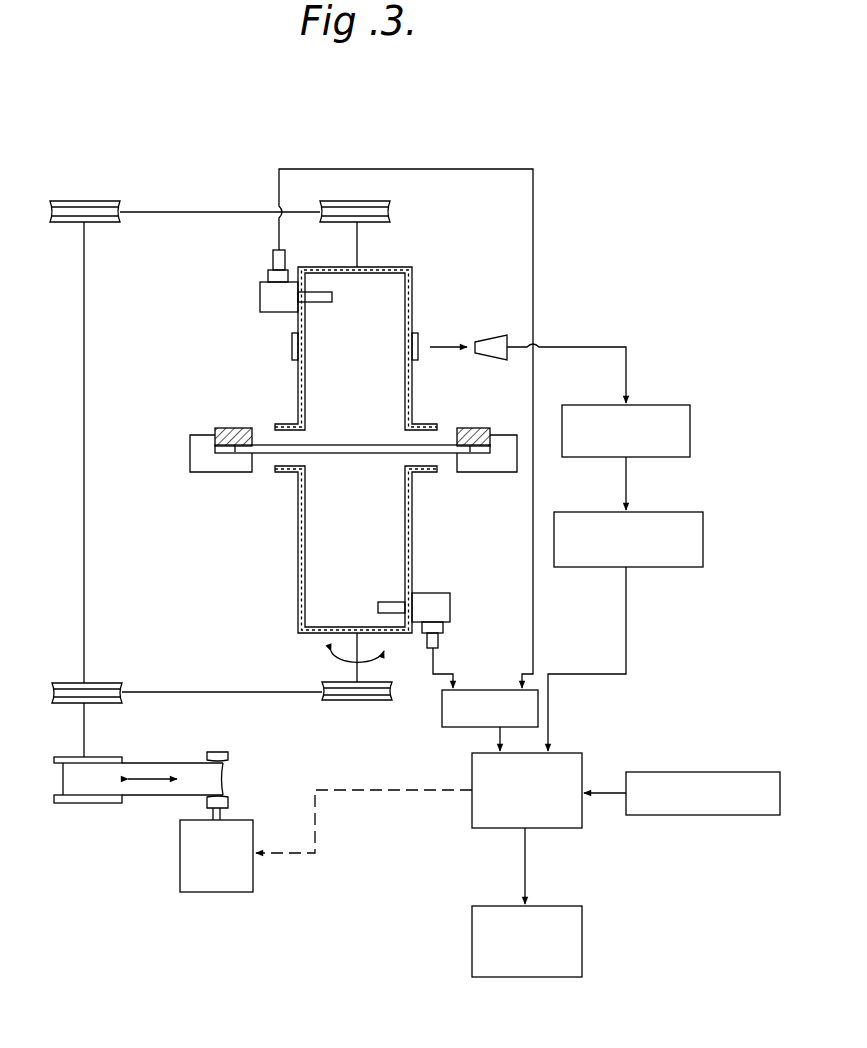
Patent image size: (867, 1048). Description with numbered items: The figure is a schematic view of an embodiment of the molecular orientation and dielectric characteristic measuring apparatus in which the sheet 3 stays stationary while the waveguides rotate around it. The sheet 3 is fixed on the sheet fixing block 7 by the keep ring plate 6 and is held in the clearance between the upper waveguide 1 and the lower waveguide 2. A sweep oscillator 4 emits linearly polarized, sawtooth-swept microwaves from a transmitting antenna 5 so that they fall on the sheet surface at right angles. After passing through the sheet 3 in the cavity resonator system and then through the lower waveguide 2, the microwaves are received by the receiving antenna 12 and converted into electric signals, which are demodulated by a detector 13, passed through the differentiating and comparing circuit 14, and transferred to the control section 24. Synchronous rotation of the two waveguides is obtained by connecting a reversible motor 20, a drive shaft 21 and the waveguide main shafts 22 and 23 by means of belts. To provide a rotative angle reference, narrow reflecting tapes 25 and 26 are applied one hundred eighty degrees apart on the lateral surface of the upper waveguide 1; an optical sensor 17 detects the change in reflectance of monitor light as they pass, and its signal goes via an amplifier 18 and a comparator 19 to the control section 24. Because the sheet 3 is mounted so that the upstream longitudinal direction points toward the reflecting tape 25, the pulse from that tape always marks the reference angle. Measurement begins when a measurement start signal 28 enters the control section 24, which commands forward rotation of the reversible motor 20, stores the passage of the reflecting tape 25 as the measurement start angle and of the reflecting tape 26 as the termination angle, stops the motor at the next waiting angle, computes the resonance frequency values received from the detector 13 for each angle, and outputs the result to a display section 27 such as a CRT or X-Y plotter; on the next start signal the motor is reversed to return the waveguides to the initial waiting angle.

The upper waveguide 1 is at (411, 288).
The lower waveguide 2 is at (413, 545).
The sheet 3 is at (455, 455).
The sweep oscillator 4 is at (277, 296).
The transmitting antenna 5 is at (333, 297).
The keep ring plate 6 is at (240, 429).
The sheet fixing block 7 is at (196, 441).
The receiving antenna 12 is at (378, 602).
The detector 13 is at (448, 593).
The differentiating and comparing circuit 14 is at (442, 727).
The optical sensor 17 is at (491, 343).
The amplifier 18 is at (690, 405).
The comparator 19 is at (703, 512).
The reversible motor 20 is at (180, 893).
The drive shaft 21 is at (84, 485).
The waveguide main shaft 22 is at (360, 250).
The waveguide main shaft 23 is at (340, 642).
The control section 24 is at (582, 753).
The reflecting tape 25 is at (418, 336).
The reflecting tape 26 is at (292, 350).
The display section 27 is at (582, 906).
The measurement start signal 28 is at (780, 772).